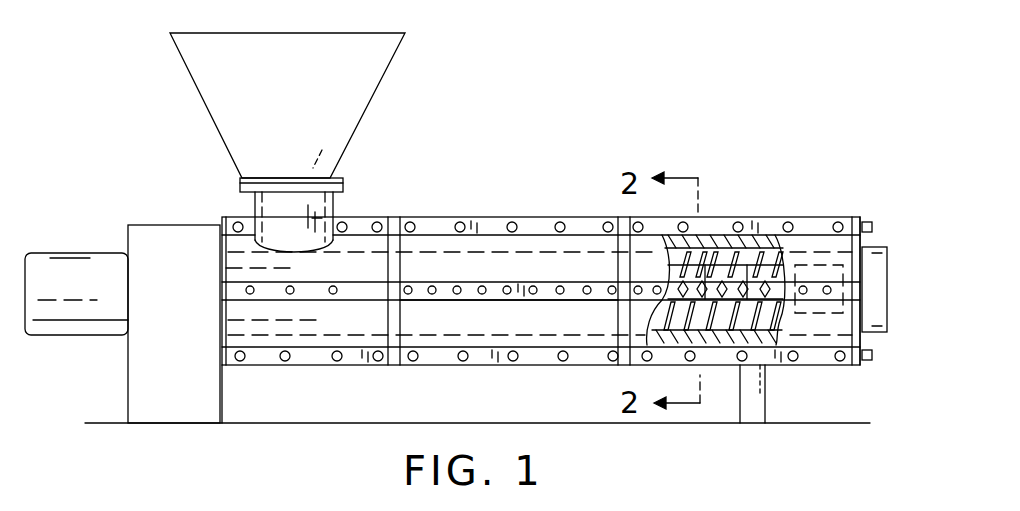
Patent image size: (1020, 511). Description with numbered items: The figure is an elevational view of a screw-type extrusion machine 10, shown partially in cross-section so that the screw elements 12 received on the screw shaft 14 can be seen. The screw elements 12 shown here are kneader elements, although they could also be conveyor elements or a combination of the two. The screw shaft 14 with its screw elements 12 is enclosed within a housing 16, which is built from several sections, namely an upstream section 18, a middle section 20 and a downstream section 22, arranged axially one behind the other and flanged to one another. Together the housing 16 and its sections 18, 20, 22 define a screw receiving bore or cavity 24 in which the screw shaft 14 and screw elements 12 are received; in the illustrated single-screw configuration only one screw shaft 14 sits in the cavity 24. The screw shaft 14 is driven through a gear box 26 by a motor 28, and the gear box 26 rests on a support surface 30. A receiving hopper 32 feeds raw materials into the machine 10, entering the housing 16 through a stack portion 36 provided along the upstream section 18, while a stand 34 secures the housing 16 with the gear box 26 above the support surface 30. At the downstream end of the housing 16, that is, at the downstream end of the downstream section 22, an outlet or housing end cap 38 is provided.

The extrusion machine 10 is at (484, 140).
The screw elements 12 is at (724, 272).
The screw shaft 14 is at (808, 340).
The housing 16 is at (540, 220).
The upstream section 18 is at (315, 322).
The middle section 20 is at (460, 320).
The downstream section 22 is at (812, 238).
The screw receiving bore or cavity 24 is at (700, 268).
The gear box 26 is at (165, 262).
The motor 28 is at (62, 280).
The support surface 30 is at (357, 425).
The receiving hopper 32 is at (377, 68).
The stand 34 is at (748, 392).
The stack portion 36 is at (333, 207).
The housing end cap 38 is at (872, 322).